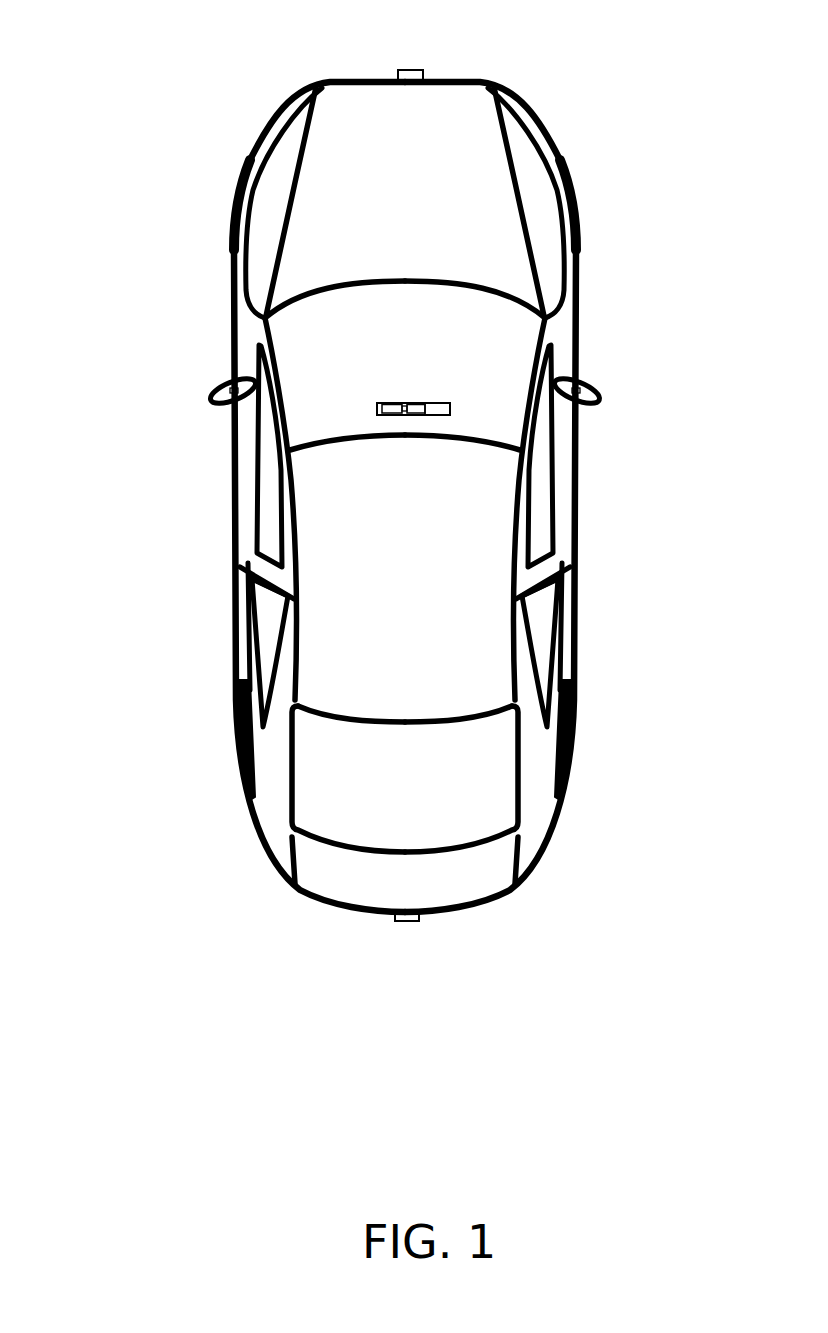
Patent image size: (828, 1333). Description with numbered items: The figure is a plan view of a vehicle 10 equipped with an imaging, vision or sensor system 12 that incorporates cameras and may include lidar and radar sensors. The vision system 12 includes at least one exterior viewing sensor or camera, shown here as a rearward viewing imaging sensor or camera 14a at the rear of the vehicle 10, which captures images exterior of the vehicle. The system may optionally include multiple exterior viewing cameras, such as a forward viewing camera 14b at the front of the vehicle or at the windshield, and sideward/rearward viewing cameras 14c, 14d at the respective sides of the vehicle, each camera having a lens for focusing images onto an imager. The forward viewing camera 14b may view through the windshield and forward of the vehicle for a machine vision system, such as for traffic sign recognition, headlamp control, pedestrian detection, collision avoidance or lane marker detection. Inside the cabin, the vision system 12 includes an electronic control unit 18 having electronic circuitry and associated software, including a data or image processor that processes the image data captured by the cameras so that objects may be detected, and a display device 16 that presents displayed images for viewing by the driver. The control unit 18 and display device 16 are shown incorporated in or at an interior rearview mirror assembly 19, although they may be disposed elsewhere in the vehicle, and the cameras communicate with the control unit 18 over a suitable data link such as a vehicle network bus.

The vehicle 10 is at (170, 95).
The vision system 12 is at (368, 928).
The rearward viewing camera 14a is at (413, 921).
The forward viewing camera 14b is at (418, 68).
The sideward/rearward viewing camera 14c is at (218, 387).
The sideward/rearward viewing camera 14d is at (594, 387).
The display device 16 is at (392, 405).
The electronic control unit 18 is at (412, 406).
The interior rearview mirror assembly 19 is at (450, 405).